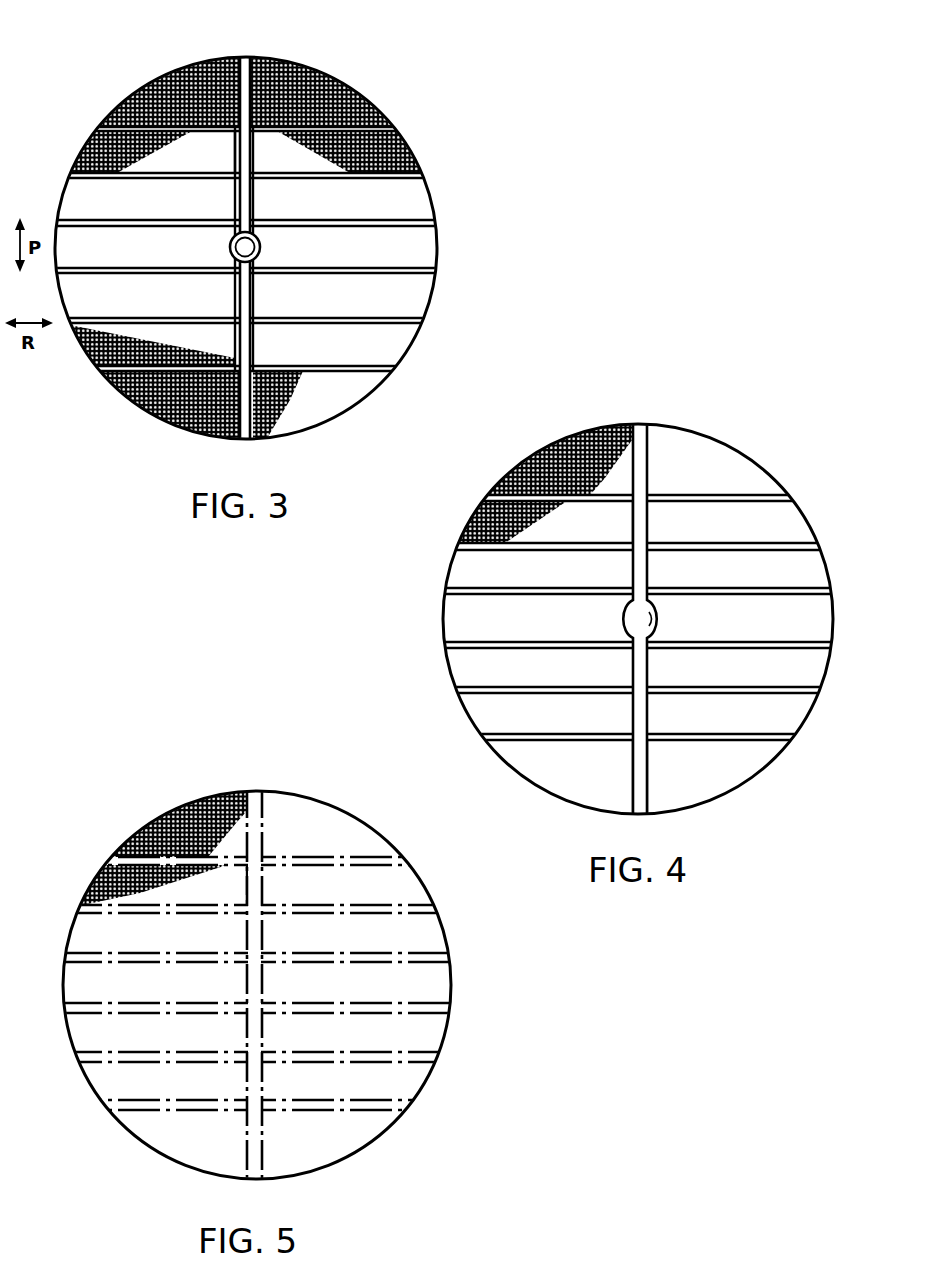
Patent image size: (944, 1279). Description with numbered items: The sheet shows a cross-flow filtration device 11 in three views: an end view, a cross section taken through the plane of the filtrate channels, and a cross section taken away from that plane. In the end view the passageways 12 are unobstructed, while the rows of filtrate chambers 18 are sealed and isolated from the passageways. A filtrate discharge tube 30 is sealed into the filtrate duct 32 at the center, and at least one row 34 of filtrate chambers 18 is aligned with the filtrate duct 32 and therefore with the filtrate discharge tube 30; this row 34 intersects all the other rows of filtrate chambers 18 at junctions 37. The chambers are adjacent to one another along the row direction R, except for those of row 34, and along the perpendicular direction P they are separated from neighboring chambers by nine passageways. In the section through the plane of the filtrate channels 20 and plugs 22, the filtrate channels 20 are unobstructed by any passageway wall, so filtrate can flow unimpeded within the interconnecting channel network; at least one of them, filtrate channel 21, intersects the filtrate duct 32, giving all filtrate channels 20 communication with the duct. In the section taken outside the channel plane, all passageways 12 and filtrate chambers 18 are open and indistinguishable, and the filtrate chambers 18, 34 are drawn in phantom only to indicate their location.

In FIG. 3, the screen disc 11 is at (68, 132).
In FIG. 4, the screen disc 11 is at (756, 423).
In FIG. 5, the screen disc 11 is at (464, 1001).
In FIG. 3, the passageways 12 is at (438, 178).
In FIG. 4, the passageways 12 is at (505, 749).
In FIG. 5, the passageways 12 is at (82, 925).
In FIG. 3, the filtrate chambers 18 is at (382, 363).
In FIG. 5, the filtrate chambers 18 is at (422, 1060).
In FIG. 4, the filtrate channels 20 is at (772, 547).
In FIG. 4, the filtrate channel 21 is at (637, 423).
In FIG. 4, the plugs 22 is at (486, 496).
In FIG. 3, the filtrate discharge tube 30 is at (230, 247).
In FIG. 3, the filtrate duct 32 is at (261, 250).
In FIG. 4, the filtrate duct 32 is at (658, 617).
In FIG. 3, the row of filtrate chambers 34 is at (244, 56).
In FIG. 5, the row of filtrate chambers 34 is at (252, 791).
In FIG. 3, the junctions 37 is at (236, 133).